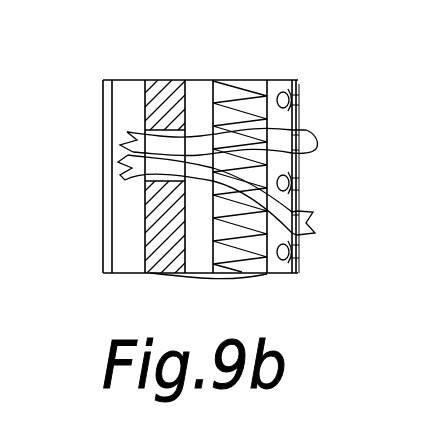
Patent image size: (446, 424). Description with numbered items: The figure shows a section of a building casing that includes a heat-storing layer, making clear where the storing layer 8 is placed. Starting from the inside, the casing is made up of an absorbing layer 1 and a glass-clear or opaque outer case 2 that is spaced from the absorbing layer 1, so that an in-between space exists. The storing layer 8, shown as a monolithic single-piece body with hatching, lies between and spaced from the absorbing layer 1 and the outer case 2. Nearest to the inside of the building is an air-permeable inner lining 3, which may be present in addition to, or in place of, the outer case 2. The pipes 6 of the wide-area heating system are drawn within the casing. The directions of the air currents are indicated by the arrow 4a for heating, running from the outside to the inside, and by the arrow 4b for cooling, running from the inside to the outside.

The absorbing layer 1 is at (237, 93).
The outer case 2 is at (110, 93).
The air-permeable inner lining 3 is at (296, 79).
The arrow for heating 4a is at (132, 145).
The arrow for cooling 4b is at (126, 168).
The pipes of the wide-area heating system 6 is at (290, 105).
The storing layer 8 is at (167, 86).